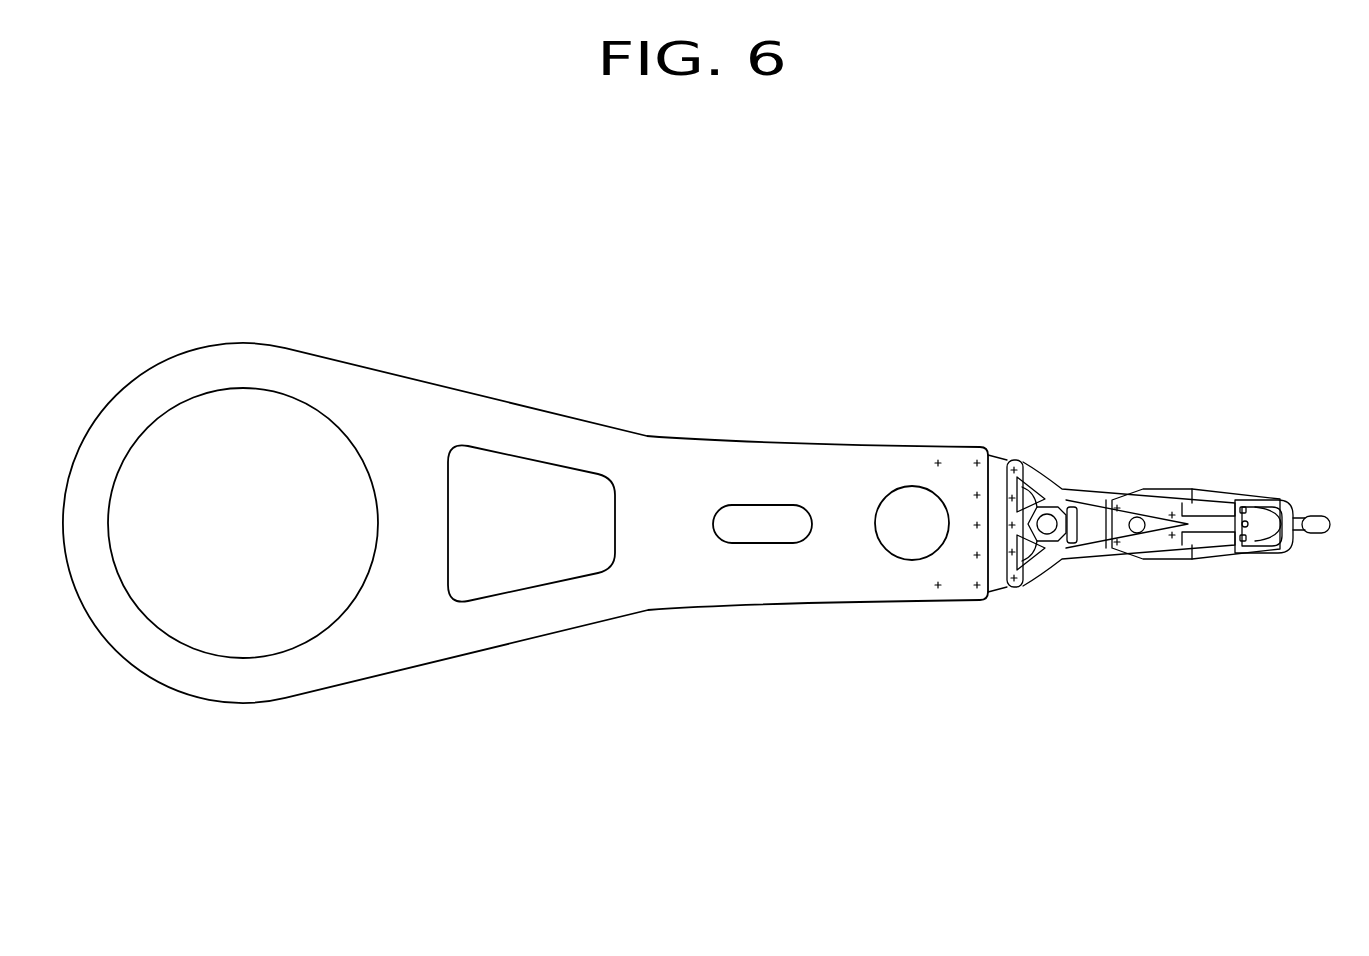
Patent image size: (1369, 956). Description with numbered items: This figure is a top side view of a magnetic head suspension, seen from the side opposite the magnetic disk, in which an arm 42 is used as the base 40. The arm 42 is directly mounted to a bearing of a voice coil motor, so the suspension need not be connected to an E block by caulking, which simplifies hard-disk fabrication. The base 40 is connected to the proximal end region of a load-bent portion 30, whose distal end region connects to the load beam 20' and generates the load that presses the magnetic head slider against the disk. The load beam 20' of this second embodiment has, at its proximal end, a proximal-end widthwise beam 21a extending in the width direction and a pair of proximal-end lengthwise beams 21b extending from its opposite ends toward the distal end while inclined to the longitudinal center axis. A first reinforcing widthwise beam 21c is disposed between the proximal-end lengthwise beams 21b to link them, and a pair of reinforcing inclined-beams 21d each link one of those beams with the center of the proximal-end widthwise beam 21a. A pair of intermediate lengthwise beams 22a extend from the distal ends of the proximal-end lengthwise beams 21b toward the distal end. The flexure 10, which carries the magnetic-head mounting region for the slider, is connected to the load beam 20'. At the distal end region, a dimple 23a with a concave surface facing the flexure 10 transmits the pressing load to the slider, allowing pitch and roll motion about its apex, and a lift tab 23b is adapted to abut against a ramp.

The base 40 is at (525, 502).
The arm 42 is at (673, 390).
The load-bent portion 30 is at (1014, 615).
The proximal-end widthwise beam 21a is at (1020, 514).
The proximal-end lengthwise beams 21b is at (1040, 483).
The first reinforcing widthwise beam 21c is at (1088, 506).
The reinforcing inclined-beams 21d is at (1022, 487).
The intermediate lengthwise beams 22a is at (1102, 500).
The flexure 10 is at (1170, 495).
The dimple 23a is at (1258, 537).
The lift tab 23b is at (1313, 520).
The load beam 20' is at (1102, 546).